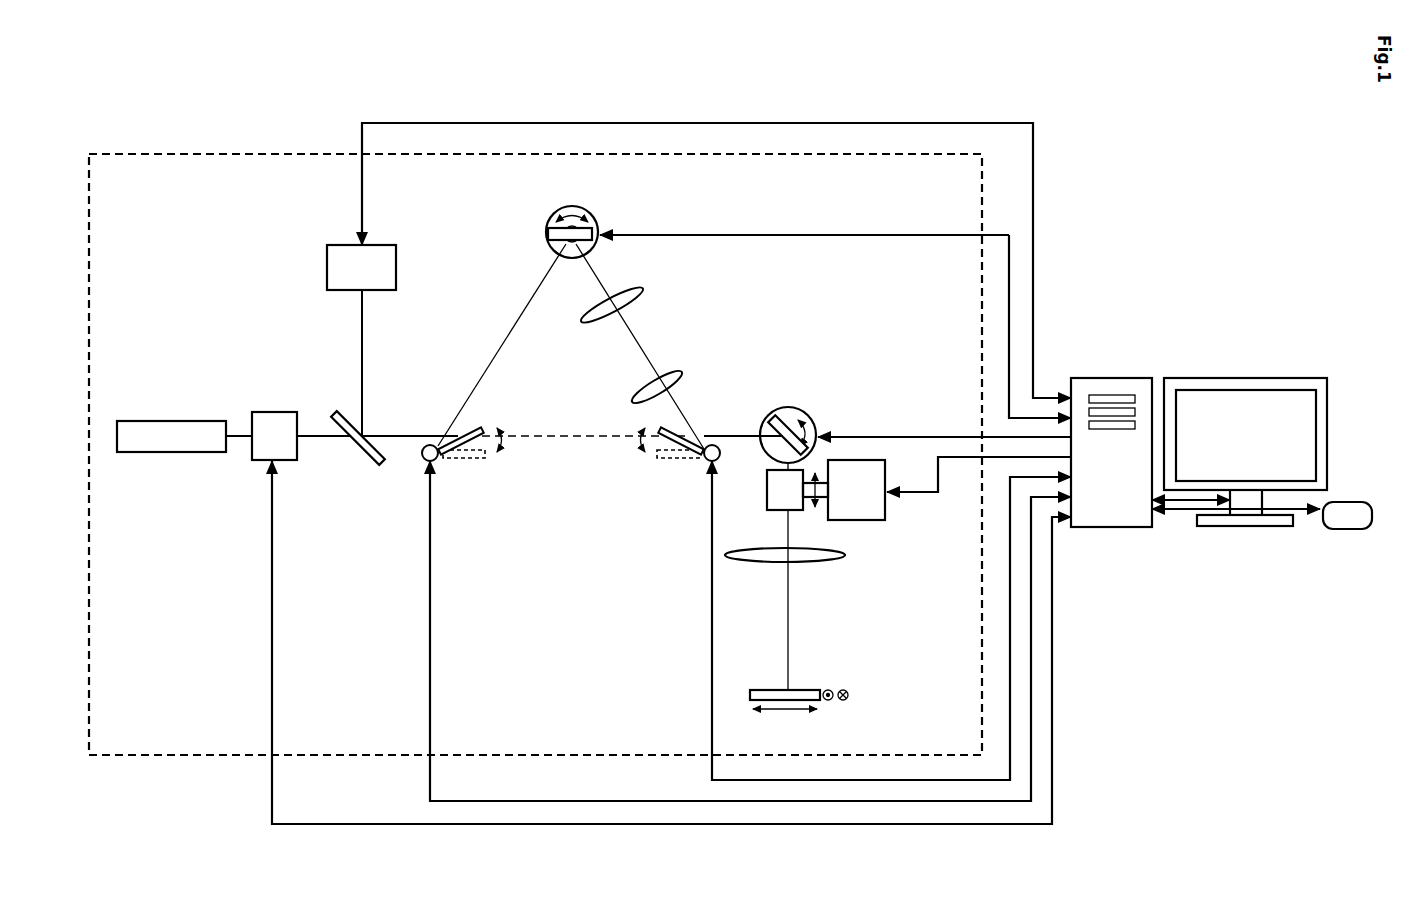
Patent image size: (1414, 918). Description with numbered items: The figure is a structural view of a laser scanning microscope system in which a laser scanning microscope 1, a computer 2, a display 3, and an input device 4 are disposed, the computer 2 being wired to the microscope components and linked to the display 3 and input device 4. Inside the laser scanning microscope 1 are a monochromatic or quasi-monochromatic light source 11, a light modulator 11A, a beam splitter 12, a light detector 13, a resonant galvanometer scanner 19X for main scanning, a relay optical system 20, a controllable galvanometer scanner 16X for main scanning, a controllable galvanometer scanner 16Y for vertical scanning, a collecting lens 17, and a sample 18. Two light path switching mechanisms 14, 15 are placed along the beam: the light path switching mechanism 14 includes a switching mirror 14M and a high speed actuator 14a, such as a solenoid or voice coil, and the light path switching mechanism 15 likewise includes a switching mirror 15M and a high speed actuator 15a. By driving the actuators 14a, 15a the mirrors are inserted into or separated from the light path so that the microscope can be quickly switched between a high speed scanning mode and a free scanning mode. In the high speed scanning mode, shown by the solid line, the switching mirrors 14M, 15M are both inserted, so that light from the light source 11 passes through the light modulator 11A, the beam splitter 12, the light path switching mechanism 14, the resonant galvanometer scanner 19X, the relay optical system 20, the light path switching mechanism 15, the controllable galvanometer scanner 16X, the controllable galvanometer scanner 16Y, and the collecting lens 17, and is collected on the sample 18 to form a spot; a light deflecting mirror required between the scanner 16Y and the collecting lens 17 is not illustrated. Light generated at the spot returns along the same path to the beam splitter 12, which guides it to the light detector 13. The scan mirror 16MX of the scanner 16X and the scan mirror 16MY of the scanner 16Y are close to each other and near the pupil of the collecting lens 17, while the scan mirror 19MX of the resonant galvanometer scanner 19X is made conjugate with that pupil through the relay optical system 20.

The laser scanning microscope 1 is at (148, 152).
The computer 2 is at (1110, 378).
The display 3 is at (1244, 378).
The input device 4 is at (1347, 502).
The light source 11 is at (185, 432).
The light modulator 11A is at (270, 418).
The beam splitter 12 is at (340, 416).
The light detector 13 is at (338, 247).
The light path switching mechanism 14 is at (490, 512).
The switching mirror 14M is at (477, 432).
The high speed actuator 14a is at (436, 462).
The light path switching mechanism 15 is at (656, 512).
The switching mirror 15M is at (652, 430).
The high speed actuator 15a is at (705, 462).
The controllable galvanometer scanner 16X is at (802, 407).
The scan mirror 16MX is at (775, 410).
The scan mirror 16MY is at (775, 490).
The controllable galvanometer scanner 16Y is at (885, 505).
The collecting lens 17 is at (845, 553).
The sample 18 is at (760, 690).
The resonant galvanometer scanner 19X is at (548, 221).
The scan mirror 19MX is at (548, 242).
The relay optical system 20 is at (683, 372).